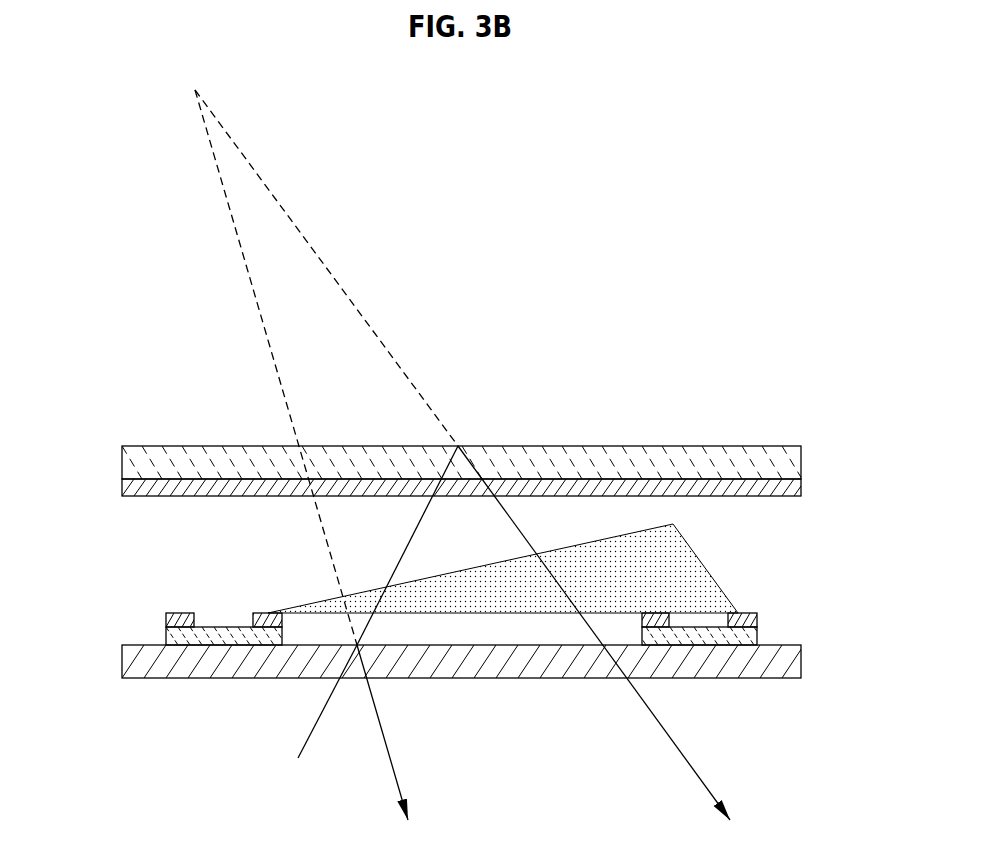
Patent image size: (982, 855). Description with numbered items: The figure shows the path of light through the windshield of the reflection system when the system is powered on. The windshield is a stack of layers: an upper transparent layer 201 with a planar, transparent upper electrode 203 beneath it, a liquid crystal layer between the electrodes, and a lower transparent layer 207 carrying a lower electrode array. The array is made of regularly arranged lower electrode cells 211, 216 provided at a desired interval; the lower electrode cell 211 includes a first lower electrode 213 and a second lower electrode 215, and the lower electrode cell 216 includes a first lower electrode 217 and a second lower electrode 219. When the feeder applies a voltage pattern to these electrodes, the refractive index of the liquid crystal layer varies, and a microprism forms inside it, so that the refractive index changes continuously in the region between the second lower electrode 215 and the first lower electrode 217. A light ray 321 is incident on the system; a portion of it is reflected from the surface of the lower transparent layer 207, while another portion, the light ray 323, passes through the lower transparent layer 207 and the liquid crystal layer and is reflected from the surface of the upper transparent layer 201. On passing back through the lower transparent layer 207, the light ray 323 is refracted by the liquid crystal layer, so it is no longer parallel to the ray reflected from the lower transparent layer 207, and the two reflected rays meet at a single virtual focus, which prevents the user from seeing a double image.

The upper transparent layer 201 is at (133, 463).
The upper electrode 203 is at (133, 490).
The lower transparent layer 207 is at (787, 662).
The lower electrode cell 211 is at (227, 637).
The first lower electrode 213 is at (180, 620).
The second lower electrode 215 is at (266, 620).
The lower electrode cell 216 is at (728, 637).
The first lower electrode 217 is at (655, 620).
The second lower electrode 219 is at (743, 615).
The light ray 321 is at (318, 723).
The light ray 323 is at (417, 532).